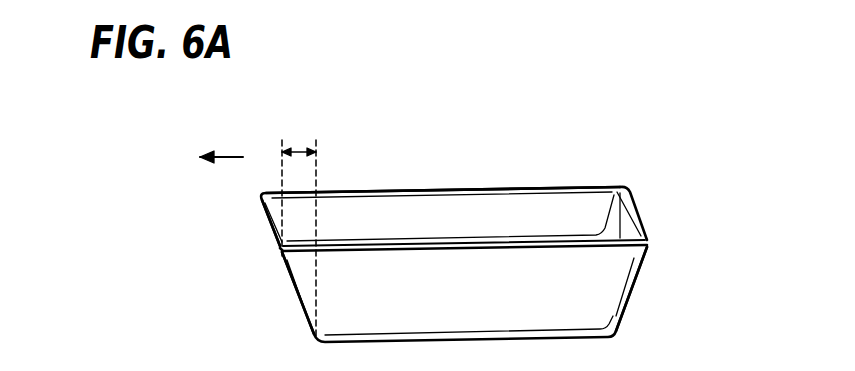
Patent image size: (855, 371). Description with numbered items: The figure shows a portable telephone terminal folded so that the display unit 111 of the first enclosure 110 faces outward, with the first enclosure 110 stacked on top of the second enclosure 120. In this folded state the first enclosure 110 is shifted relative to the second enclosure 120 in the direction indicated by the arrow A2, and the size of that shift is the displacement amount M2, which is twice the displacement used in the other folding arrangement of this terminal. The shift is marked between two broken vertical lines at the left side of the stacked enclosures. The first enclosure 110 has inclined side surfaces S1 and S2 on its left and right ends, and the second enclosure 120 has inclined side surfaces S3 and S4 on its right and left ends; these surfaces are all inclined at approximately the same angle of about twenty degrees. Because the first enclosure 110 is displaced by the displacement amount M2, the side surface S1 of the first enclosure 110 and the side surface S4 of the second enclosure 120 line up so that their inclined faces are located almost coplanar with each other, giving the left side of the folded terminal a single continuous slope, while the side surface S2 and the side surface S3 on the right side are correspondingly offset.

The first enclosure 110 is at (375, 222).
The display unit 111 is at (453, 188).
The second enclosure 120 is at (607, 285).
The side surface S1 is at (272, 232).
The side surface S2 is at (632, 228).
The side surface S3 is at (623, 315).
The side surface S4 is at (300, 303).
The displacement amount M2 is at (305, 150).
The arrow A2 is at (235, 155).